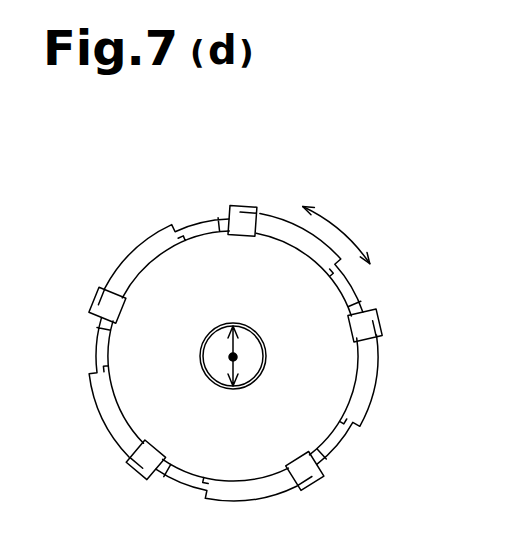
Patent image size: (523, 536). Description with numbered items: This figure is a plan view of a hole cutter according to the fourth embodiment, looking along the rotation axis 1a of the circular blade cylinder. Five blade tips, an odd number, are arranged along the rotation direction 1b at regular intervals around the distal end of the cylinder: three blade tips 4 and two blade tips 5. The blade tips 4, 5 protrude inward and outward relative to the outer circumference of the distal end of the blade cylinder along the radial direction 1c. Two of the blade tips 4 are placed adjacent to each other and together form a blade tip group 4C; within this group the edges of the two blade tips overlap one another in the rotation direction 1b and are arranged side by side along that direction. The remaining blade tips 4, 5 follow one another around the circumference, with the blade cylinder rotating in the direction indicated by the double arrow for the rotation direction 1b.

The blade tip 4 is at (111, 306).
The blade tip group 4C is at (182, 184).
The blade tip 5 is at (373, 325).
The rotation axis 1a is at (236, 357).
The rotation direction 1b is at (335, 226).
The radial direction 1c is at (235, 367).